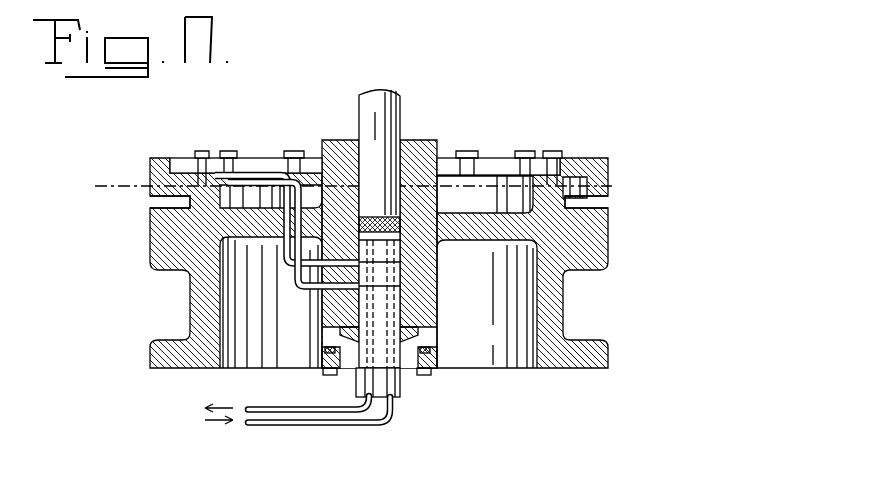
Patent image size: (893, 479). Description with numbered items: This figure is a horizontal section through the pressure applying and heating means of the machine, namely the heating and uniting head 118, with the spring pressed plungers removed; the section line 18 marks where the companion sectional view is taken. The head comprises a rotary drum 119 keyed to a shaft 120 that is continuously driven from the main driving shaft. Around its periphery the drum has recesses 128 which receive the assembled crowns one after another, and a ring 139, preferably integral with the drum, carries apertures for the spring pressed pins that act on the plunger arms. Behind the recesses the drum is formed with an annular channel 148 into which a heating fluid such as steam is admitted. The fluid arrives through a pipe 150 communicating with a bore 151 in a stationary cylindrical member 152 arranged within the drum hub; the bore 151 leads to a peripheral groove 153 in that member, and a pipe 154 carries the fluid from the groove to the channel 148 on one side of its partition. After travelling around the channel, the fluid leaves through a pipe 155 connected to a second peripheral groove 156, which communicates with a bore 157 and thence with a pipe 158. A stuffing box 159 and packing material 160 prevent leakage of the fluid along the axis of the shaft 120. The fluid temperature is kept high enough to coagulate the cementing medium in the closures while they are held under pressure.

The section line 18— 18 is at (130, 179).
The heating and uniting head 118 is at (550, 300).
The rotary drum 119 is at (580, 363).
The shaft 120 is at (383, 128).
The peripheral recesses 128 is at (157, 200).
The ring 139 is at (152, 349).
The annular channel 148 is at (580, 160).
The pipe 150 is at (380, 421).
The bore 151 is at (407, 392).
The stationary cylindrical member 152 is at (358, 382).
The peripheral groove 153 is at (403, 264).
The pipe 154 is at (253, 185).
The pipe 155 is at (272, 172).
The peripheral groove 156 is at (403, 287).
The bore 157 is at (343, 403).
The pipe 158 is at (277, 407).
The stuffing box 159 is at (418, 333).
The packing material 160 is at (397, 228).